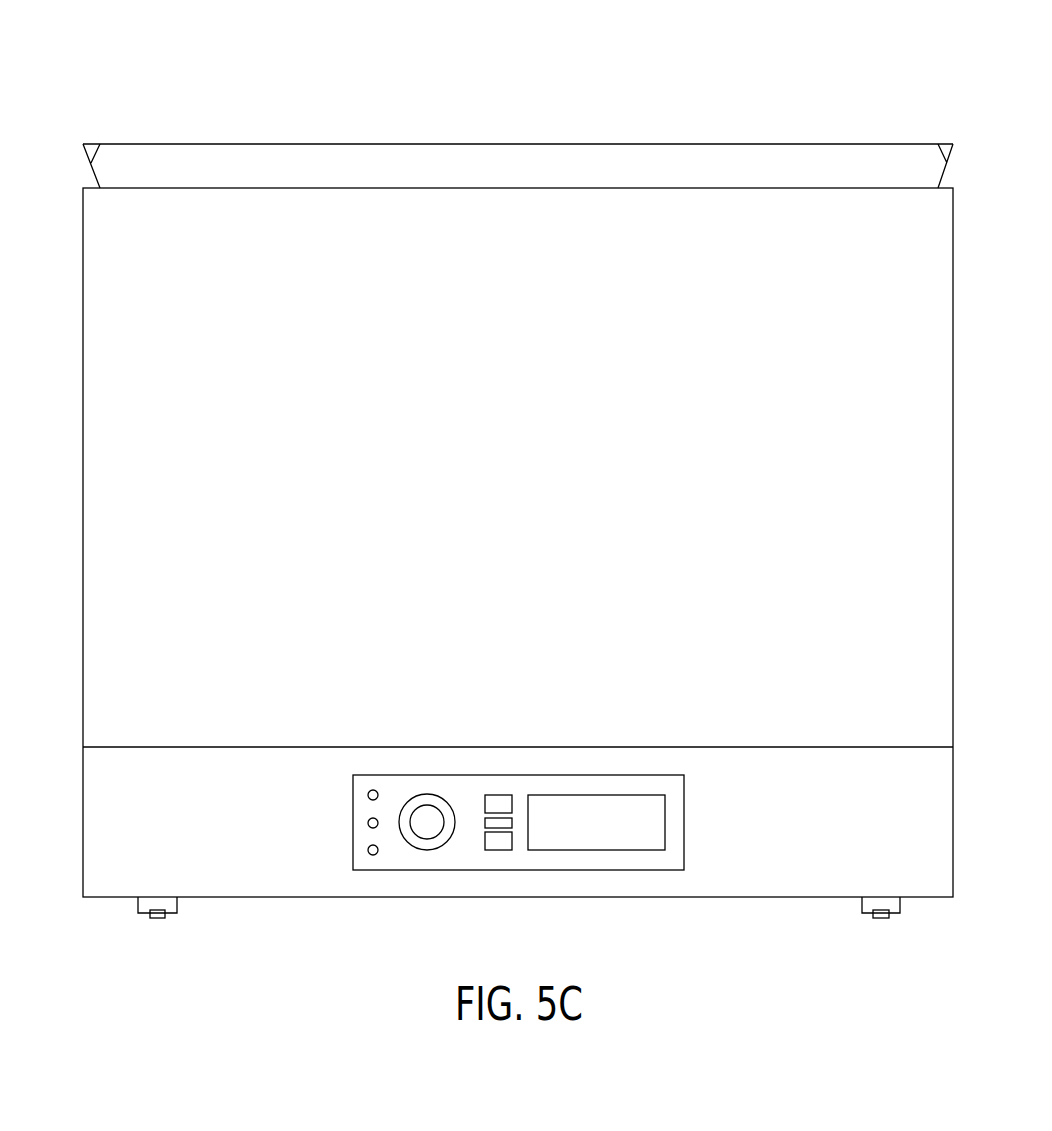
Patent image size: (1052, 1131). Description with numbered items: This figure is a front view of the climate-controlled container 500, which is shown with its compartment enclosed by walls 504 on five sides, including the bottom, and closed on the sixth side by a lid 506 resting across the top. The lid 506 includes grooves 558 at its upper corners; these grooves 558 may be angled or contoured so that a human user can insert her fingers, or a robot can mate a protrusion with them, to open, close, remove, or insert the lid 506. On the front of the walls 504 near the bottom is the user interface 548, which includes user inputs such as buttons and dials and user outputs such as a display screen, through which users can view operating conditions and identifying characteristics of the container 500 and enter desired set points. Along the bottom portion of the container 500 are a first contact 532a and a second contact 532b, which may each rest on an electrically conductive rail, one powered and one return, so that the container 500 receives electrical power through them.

The climate-controlled container 500 is at (112, 74).
The walls 504 is at (108, 258).
The lid 506 is at (385, 157).
The grooves 558 is at (90, 152).
The user interface 548 is at (687, 822).
The first contact 532a is at (155, 920).
The second contact 532b is at (880, 920).